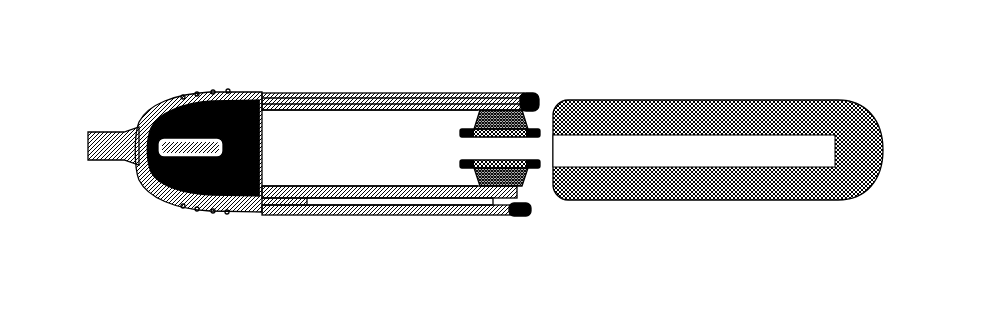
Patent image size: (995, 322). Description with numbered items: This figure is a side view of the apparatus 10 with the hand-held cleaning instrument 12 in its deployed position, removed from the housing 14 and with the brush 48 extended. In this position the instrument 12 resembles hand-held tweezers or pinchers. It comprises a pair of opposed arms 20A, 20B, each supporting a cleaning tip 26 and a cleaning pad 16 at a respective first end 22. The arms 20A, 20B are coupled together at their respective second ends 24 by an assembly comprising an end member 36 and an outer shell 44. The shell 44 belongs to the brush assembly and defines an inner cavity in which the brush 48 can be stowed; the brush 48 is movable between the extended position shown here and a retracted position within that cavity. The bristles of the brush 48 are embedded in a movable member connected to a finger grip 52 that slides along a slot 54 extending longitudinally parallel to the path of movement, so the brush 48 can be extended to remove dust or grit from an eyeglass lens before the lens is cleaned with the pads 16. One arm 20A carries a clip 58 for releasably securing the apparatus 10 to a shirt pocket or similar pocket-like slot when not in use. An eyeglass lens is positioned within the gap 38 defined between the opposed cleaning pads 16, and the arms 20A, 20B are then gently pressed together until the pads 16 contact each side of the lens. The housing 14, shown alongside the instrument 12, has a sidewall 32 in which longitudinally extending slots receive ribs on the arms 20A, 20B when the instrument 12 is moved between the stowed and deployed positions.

The apparatus 10 is at (653, 62).
The hand-held cleaning instrument 12 is at (338, 64).
The housing 14 is at (776, 98).
The cleaning pad 16 is at (540, 131).
The arm 20A is at (300, 217).
The arm 20B is at (441, 92).
The first end 22 is at (512, 95).
The second end 24 is at (213, 92).
The cleaning tip 26 is at (521, 131).
The sidewall 32 is at (663, 200).
The end member 36 is at (265, 149).
The gap 38 is at (500, 149).
The outer shell 44 is at (155, 101).
The brush 48 is at (103, 160).
The finger grip 52 is at (168, 148).
The slot 54 is at (213, 148).
The clip 58 is at (403, 213).